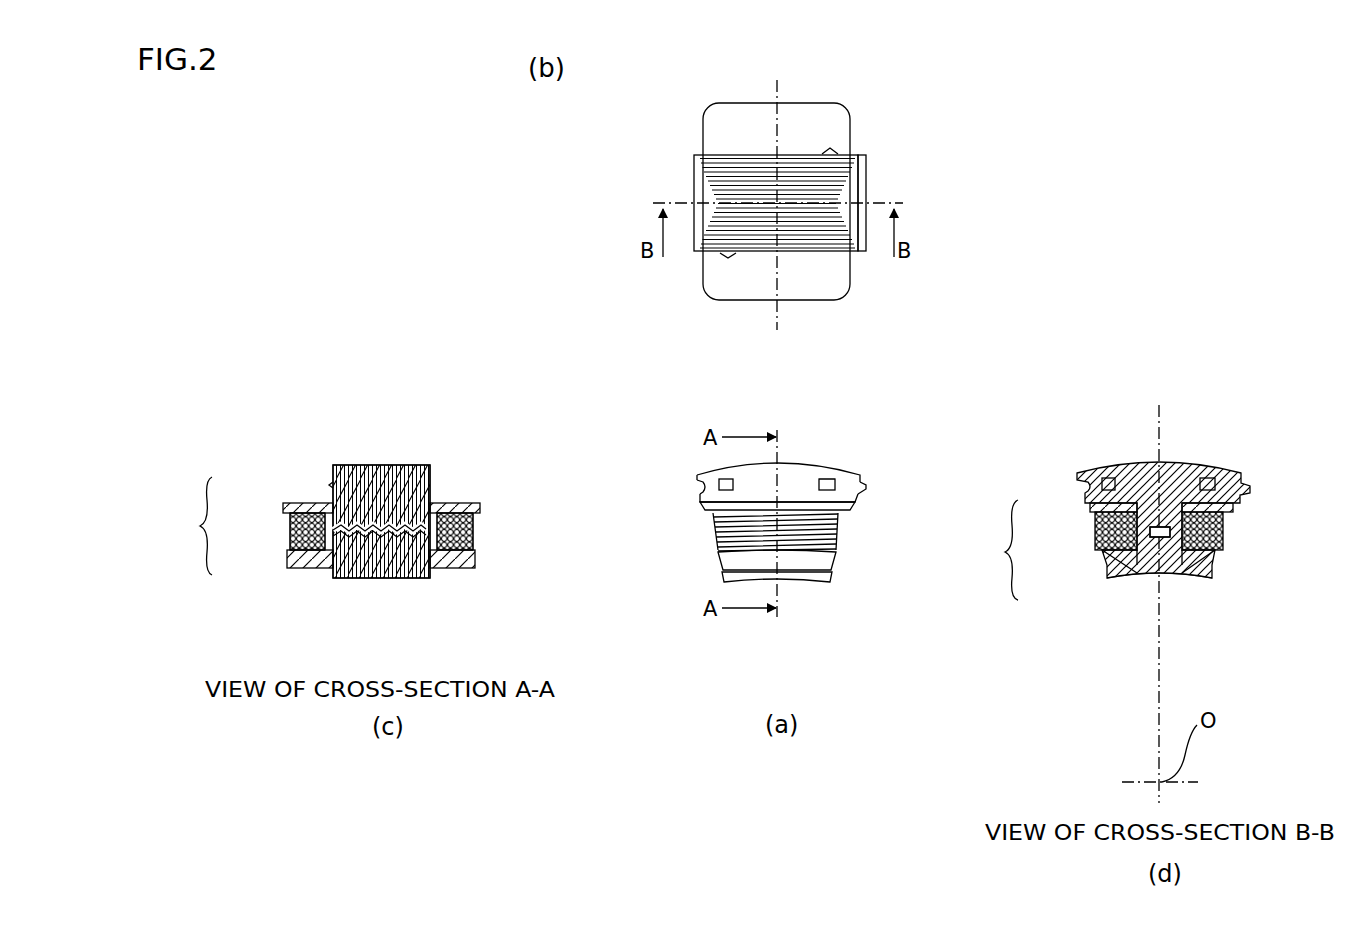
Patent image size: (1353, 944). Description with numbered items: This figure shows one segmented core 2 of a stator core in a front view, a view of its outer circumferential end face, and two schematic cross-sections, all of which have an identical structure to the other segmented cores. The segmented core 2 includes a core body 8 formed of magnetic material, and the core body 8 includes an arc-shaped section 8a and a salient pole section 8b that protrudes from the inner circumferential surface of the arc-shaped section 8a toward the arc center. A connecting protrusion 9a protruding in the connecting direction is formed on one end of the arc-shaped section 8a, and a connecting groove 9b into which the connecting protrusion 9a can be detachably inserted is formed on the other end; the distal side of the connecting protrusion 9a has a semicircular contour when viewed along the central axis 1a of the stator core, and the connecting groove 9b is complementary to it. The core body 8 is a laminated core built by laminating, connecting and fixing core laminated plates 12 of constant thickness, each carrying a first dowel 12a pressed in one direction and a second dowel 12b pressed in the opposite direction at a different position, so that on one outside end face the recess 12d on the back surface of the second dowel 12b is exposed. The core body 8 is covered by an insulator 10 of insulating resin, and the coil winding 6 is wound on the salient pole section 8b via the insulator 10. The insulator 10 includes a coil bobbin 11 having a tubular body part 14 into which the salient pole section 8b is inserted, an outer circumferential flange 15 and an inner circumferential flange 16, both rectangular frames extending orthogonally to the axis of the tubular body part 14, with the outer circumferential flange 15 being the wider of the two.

The central axis of the stator core 1a is at (778, 90).
The segmented core 2 is at (856, 93).
The coil winding 6 is at (482, 537).
The core body 8 is at (867, 242).
The arc-shaped section 8a is at (832, 230).
The salient pole section 8b is at (830, 572).
The connecting protrusion 9a is at (867, 173).
The connecting groove 9b is at (700, 488).
The insulator 10 is at (755, 275).
The coil bobbin 11 is at (598, 538).
The core laminated plate 12 is at (333, 487).
The first dowel 12a is at (728, 252).
The second dowel 12b is at (820, 154).
The recess on back surface of second dowel 12d is at (830, 480).
The tubular body part 14 is at (318, 537).
The outer circumferential flange 15 is at (805, 282).
The inner circumferential flange 16 is at (823, 560).